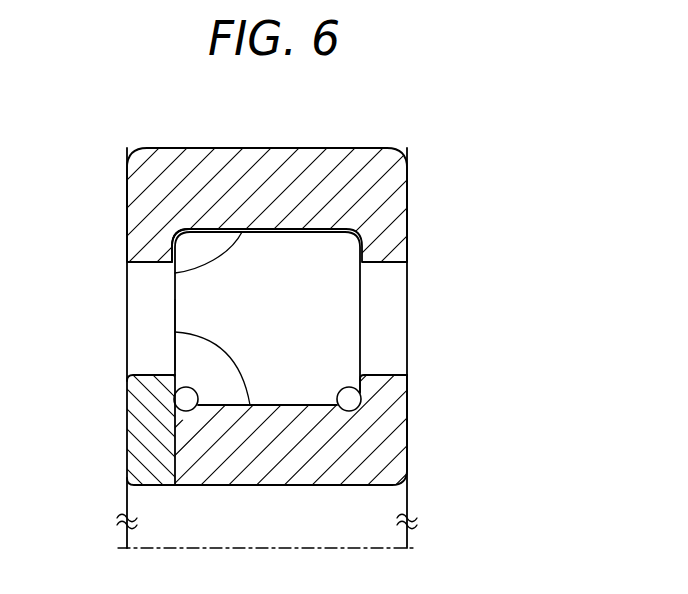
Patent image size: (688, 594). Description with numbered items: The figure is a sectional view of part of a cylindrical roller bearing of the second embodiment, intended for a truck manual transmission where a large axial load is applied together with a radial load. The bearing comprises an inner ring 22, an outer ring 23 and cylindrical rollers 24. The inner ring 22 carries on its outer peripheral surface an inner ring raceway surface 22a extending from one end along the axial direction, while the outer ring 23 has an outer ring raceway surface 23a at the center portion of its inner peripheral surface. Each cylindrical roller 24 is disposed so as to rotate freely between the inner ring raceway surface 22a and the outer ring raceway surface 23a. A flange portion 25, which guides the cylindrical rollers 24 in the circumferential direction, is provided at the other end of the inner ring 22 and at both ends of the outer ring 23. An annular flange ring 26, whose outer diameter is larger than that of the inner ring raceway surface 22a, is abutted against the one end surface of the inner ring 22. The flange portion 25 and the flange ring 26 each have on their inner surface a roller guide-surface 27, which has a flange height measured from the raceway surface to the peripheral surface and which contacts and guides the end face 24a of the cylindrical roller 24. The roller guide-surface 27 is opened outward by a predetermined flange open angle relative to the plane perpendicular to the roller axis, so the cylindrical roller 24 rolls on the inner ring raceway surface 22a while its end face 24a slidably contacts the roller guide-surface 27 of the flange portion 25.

The inner ring 22 is at (390, 425).
The inner ring raceway surface 22a is at (175, 332).
The outer ring 23 is at (155, 193).
The outer ring raceway surface 23a is at (185, 275).
The cylindrical roller 24 is at (343, 319).
The end face 24a is at (175, 365).
The flange portion 25 is at (375, 378).
The flange ring 26 is at (155, 452).
The roller guide-surface 27 is at (185, 405).